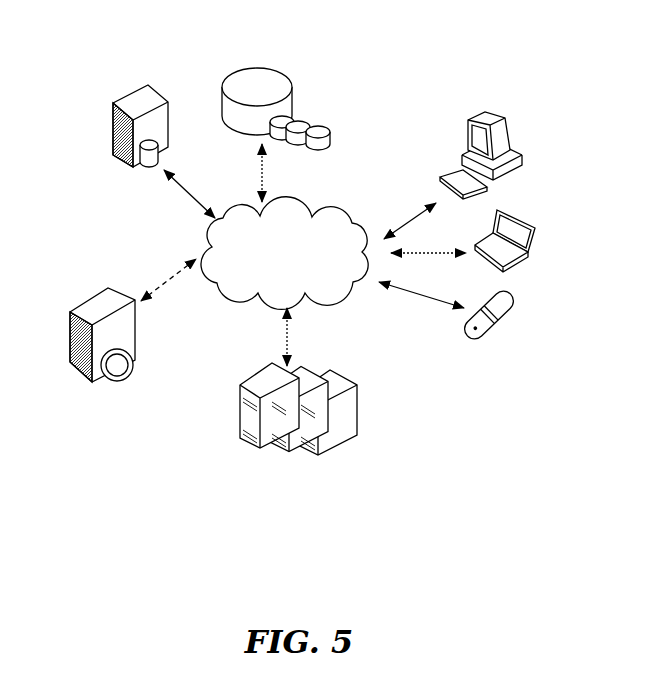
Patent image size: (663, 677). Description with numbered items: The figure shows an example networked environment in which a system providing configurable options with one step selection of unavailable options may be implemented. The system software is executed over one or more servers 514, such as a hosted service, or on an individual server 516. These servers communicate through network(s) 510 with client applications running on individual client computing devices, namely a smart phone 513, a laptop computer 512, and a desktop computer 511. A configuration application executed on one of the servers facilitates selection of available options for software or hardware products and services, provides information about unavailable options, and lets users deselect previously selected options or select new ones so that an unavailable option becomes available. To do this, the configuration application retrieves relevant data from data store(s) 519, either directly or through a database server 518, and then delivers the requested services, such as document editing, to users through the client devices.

The network(s) 510 is at (290, 196).
The desktop computer 511 is at (512, 108).
The laptop computer 512 is at (537, 205).
The smart phone 513 is at (514, 295).
The servers 514 is at (258, 368).
The individual server 516 is at (85, 295).
The database server 518 is at (140, 177).
The data store(s) 519 is at (270, 48).